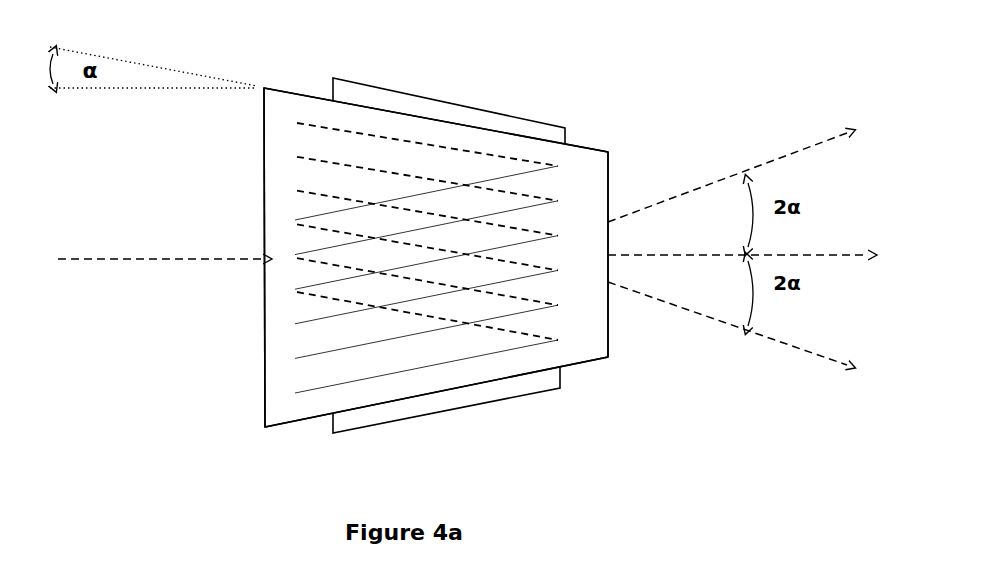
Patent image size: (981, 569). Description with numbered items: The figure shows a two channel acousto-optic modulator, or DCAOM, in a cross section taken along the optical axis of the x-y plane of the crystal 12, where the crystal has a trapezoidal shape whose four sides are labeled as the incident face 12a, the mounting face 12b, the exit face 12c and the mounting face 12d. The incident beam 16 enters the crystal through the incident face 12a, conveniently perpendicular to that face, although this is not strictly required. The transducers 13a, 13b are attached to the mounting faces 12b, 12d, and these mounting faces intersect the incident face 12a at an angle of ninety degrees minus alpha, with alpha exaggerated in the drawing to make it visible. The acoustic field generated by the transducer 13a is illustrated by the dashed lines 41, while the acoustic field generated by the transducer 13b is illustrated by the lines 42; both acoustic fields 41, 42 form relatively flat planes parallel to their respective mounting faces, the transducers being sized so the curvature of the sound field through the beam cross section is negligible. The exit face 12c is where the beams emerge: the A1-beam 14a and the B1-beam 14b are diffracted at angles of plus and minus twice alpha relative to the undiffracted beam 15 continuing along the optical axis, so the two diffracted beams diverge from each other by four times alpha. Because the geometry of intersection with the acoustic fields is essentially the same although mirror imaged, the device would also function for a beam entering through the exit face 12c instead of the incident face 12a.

The crystal 12 is at (250, 353).
The incident face 12a is at (262, 137).
The mounting face 12b is at (297, 86).
The exit face 12c is at (608, 330).
The mounting face 12d is at (293, 428).
The transducer 13a is at (479, 105).
The transducer 13b is at (515, 408).
The A1-beam 14a is at (755, 345).
The B1-beam 14b is at (715, 167).
The central output light ray 15 is at (843, 262).
The incident beam 16 is at (120, 245).
The acoustic field 41 is at (313, 162).
The acoustic field 42 is at (310, 347).